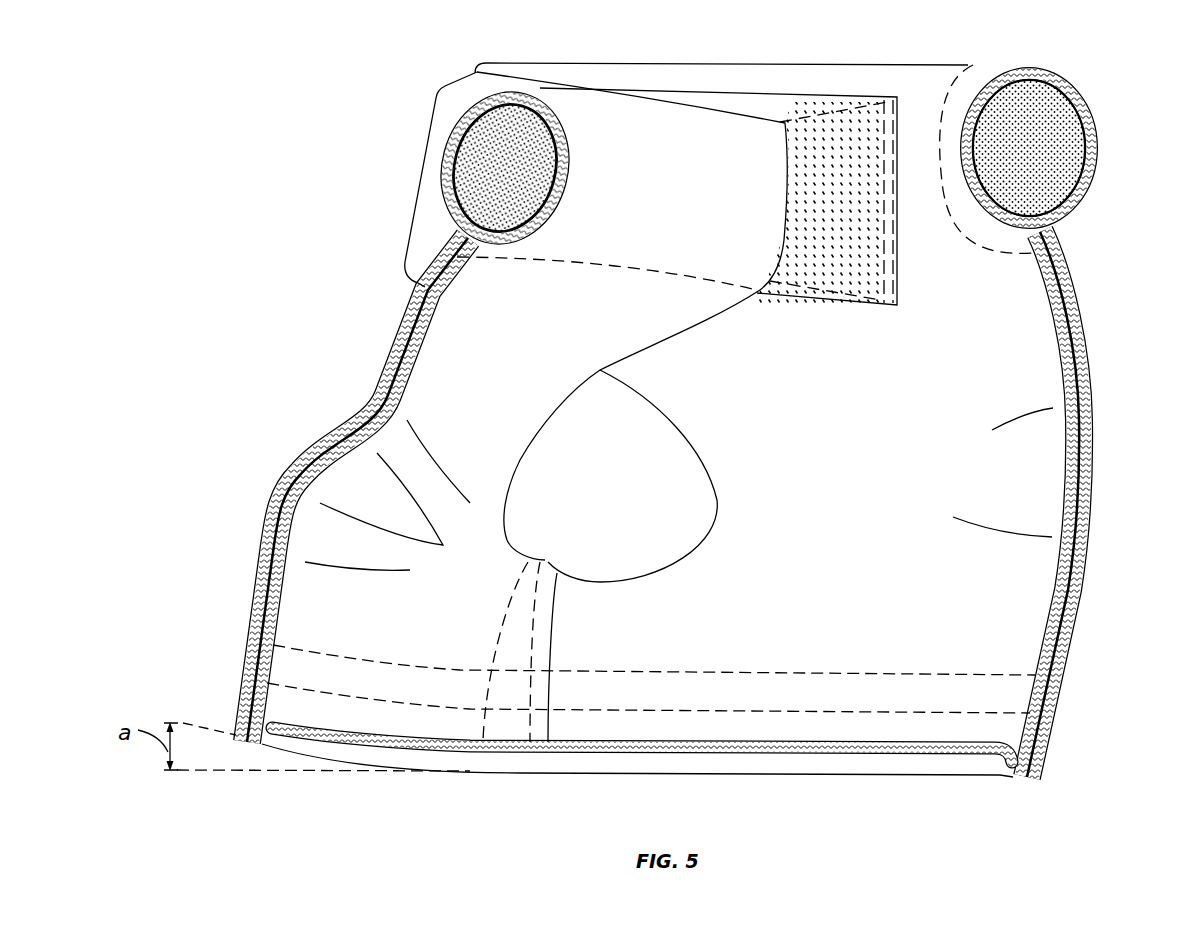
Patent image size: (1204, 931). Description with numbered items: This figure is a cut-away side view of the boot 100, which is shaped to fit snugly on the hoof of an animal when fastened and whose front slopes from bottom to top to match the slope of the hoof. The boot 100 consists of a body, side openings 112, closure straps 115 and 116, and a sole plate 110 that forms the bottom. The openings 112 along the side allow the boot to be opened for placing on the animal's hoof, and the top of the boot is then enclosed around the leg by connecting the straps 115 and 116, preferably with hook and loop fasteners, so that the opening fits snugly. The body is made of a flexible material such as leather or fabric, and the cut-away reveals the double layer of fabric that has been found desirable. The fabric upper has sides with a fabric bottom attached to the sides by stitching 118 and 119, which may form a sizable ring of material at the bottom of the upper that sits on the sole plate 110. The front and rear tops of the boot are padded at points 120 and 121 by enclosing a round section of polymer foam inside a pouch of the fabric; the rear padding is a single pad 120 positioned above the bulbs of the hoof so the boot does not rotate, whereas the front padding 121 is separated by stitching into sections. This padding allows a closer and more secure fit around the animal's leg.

The boot 100 is at (280, 96).
The sole plate 110 is at (258, 583).
The side openings 112 is at (615, 445).
The closure strap 115 is at (420, 195).
The closure strap 116 is at (847, 242).
The stitching 118 is at (280, 735).
The stitching 119 is at (1000, 768).
The rear pad 120 is at (1043, 110).
The front pad 121 is at (488, 150).